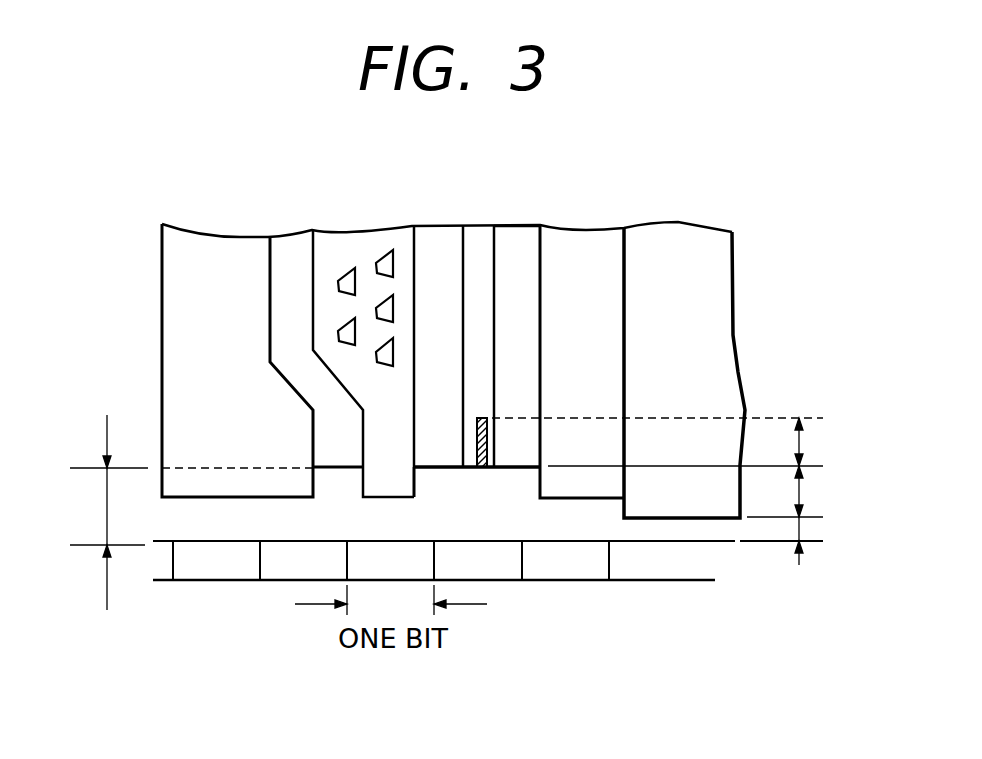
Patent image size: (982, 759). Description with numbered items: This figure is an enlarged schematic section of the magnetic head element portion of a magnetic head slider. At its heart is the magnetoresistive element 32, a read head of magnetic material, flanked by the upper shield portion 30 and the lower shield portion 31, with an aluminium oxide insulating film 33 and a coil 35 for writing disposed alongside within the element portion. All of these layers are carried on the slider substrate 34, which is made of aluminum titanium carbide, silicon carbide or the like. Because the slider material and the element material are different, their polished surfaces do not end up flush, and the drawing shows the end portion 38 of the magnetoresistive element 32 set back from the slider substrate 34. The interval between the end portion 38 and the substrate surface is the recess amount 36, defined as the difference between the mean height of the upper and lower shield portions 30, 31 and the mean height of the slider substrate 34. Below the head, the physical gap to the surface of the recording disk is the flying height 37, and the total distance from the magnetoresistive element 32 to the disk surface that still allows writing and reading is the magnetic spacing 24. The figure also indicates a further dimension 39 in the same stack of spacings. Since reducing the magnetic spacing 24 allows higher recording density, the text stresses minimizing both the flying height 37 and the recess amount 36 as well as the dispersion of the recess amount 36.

The magnetic spacing 24 is at (107, 505).
The upper shield portion 30 is at (443, 232).
The lower shield portion 31 is at (518, 238).
The magnetoresistive element 32 is at (487, 438).
The aluminium oxide insulating film 33 is at (328, 310).
The slider substrate 34 is at (698, 295).
The coil 35 is at (349, 273).
The recess amount 36 is at (800, 488).
The flying height 37 is at (800, 532).
The end portion 38 is at (477, 467).
The distance 39 is at (800, 441).